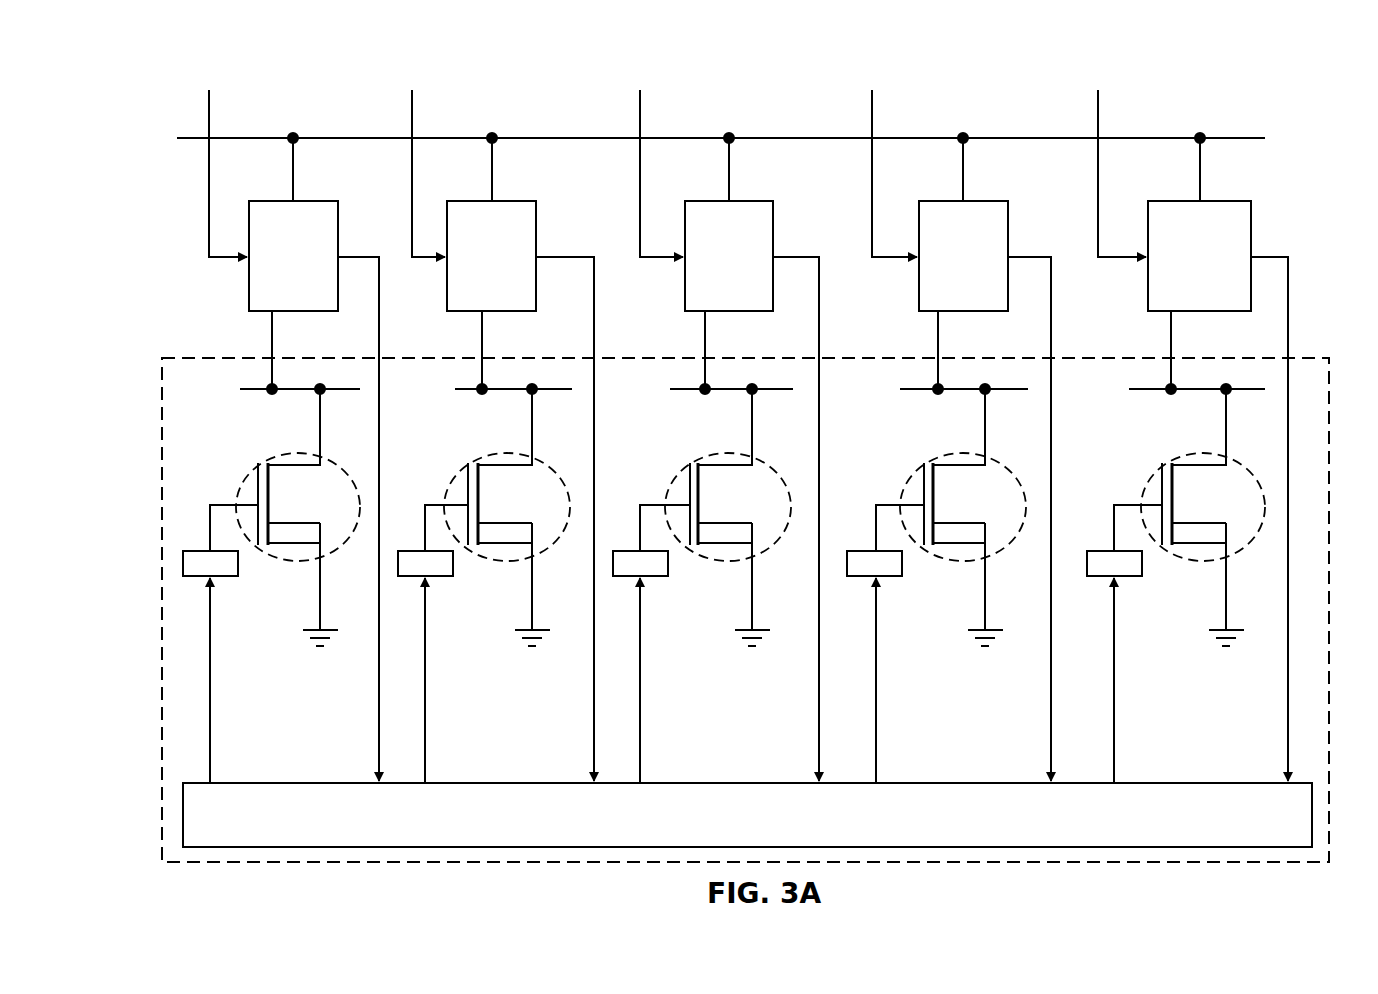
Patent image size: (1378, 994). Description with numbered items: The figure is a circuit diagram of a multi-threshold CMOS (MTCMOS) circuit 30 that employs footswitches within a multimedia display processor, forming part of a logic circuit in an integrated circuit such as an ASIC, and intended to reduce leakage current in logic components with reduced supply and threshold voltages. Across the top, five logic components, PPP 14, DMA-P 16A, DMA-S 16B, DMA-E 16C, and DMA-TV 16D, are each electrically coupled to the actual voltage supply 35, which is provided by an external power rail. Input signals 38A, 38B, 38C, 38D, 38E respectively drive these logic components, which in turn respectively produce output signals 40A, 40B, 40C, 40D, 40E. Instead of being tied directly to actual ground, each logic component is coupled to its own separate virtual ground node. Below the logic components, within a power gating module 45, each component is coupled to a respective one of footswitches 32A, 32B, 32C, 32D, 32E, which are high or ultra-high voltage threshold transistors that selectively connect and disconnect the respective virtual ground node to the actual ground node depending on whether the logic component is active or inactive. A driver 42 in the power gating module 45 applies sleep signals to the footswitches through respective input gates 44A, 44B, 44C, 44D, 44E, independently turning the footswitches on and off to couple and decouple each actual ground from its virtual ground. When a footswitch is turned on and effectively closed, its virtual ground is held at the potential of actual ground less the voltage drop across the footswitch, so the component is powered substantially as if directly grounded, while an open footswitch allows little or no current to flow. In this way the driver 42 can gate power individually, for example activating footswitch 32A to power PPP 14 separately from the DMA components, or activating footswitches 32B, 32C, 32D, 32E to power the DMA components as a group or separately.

The multi-threshold CMOS (MTCMOS) circuit 30 is at (1245, 90).
The voltage supply VDD 35 is at (1222, 140).
The input signal 38A is at (207, 202).
The input signal 38B is at (410, 202).
The input signal 38C is at (638, 202).
The input signal 38D is at (870, 202).
The input signal 38E is at (1096, 202).
The PPP 14 is at (315, 224).
The DMA-P 16A is at (513, 224).
The DMA-S 16B is at (751, 224).
The DMA-E 16C is at (985, 224).
The DMA-TV 16D is at (1221, 224).
The output signal 40A is at (380, 300).
The output signal 40B is at (595, 300).
The output signal 40C is at (820, 300).
The output signal 40D is at (1052, 300).
The output signal 40E is at (1289, 300).
The footswitch 32A is at (318, 458).
The footswitch 32B is at (530, 458).
The footswitch 32C is at (752, 458).
The footswitch 32D is at (986, 458).
The footswitch 32E is at (1225, 458).
The input gate 44A is at (230, 576).
The input gate 44B is at (443, 576).
The input gate 44C is at (660, 576).
The input gate 44D is at (894, 576).
The input gate 44E is at (1132, 576).
The driver 42 is at (747, 815).
The power gating module 45 is at (1298, 358).